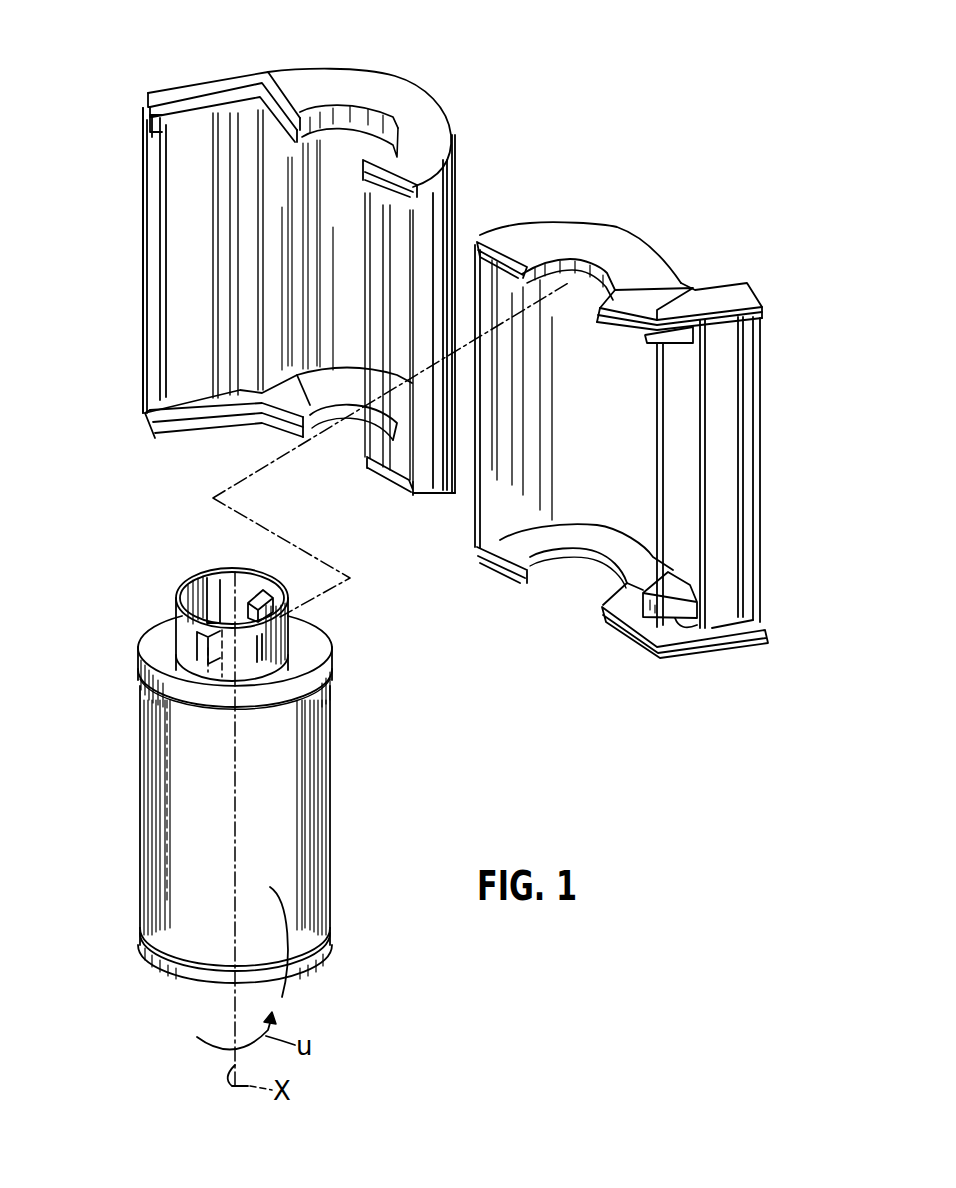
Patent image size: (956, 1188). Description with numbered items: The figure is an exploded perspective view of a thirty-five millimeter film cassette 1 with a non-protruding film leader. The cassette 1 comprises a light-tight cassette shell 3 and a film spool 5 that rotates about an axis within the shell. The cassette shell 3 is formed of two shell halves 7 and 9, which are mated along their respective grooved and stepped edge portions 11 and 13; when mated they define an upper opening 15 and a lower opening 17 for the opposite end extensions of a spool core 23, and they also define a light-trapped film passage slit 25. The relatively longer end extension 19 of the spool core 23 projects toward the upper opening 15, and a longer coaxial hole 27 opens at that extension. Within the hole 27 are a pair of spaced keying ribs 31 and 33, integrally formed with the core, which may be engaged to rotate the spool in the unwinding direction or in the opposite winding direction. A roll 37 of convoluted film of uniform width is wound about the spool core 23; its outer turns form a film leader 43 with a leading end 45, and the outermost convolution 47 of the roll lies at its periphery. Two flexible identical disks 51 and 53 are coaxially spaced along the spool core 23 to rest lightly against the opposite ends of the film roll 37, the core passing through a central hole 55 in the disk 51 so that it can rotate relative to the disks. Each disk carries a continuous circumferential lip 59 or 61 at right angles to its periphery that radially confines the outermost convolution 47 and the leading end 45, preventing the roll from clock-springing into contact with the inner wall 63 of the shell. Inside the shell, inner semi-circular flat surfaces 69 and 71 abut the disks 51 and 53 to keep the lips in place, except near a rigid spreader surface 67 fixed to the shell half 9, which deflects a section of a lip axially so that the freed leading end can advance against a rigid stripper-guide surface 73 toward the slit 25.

The film cassette 1 is at (250, 55).
The cassette shell 3 is at (541, 222).
The film spool 5 is at (340, 805).
The shell half 7 is at (398, 82).
The shell half 9 is at (627, 233).
The grooved and stepped edge portion 11 is at (157, 117).
The grooved and stepped edge portion 13 is at (476, 248).
The upper opening 15 is at (360, 130).
The lower opening 17 is at (593, 266).
The longer end extension 19 is at (178, 592).
The spool core 23 is at (272, 656).
The film passage slit 25 is at (172, 290).
The longer coaxial hole 27 is at (212, 577).
The keying rib 31 is at (250, 597).
The keying rib 33 is at (173, 673).
The film roll 37 is at (140, 790).
The film leader 43 is at (282, 997).
The leading end 45 is at (293, 864).
The outermost convolution 47 is at (205, 843).
The flexible disk 51 is at (147, 652).
The flexible disk 53 is at (305, 962).
The central hole 55 is at (175, 643).
The circumferential lip 59 is at (282, 702).
The circumferential lip 61 is at (197, 972).
The inner wall 63 is at (360, 273).
The spreader surface 67 is at (680, 626).
The semi-circular flat surface 69 is at (383, 145).
The semi-circular flat surface 71 is at (340, 382).
The stripper-guide surface 73 is at (650, 572).